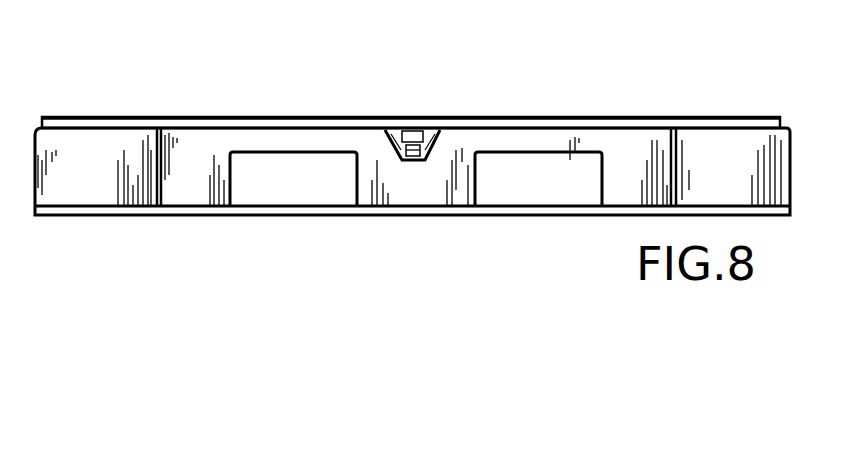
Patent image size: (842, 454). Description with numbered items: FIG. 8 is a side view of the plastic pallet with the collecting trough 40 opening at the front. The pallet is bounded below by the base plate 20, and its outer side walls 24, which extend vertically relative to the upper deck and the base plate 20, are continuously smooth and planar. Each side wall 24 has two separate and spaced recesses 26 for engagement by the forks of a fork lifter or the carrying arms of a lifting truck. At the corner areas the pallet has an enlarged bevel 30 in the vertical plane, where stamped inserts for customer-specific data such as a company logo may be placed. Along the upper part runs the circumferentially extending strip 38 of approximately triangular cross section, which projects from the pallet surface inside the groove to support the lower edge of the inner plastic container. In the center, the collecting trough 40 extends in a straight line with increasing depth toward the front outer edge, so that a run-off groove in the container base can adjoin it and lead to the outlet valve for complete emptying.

The base plate 20 is at (547, 215).
The outer side wall 24 is at (195, 207).
The recess 26 is at (547, 163).
The bevel 30 is at (107, 203).
The circumferentially extending strip 38 is at (177, 117).
The collecting trough 40 is at (415, 162).